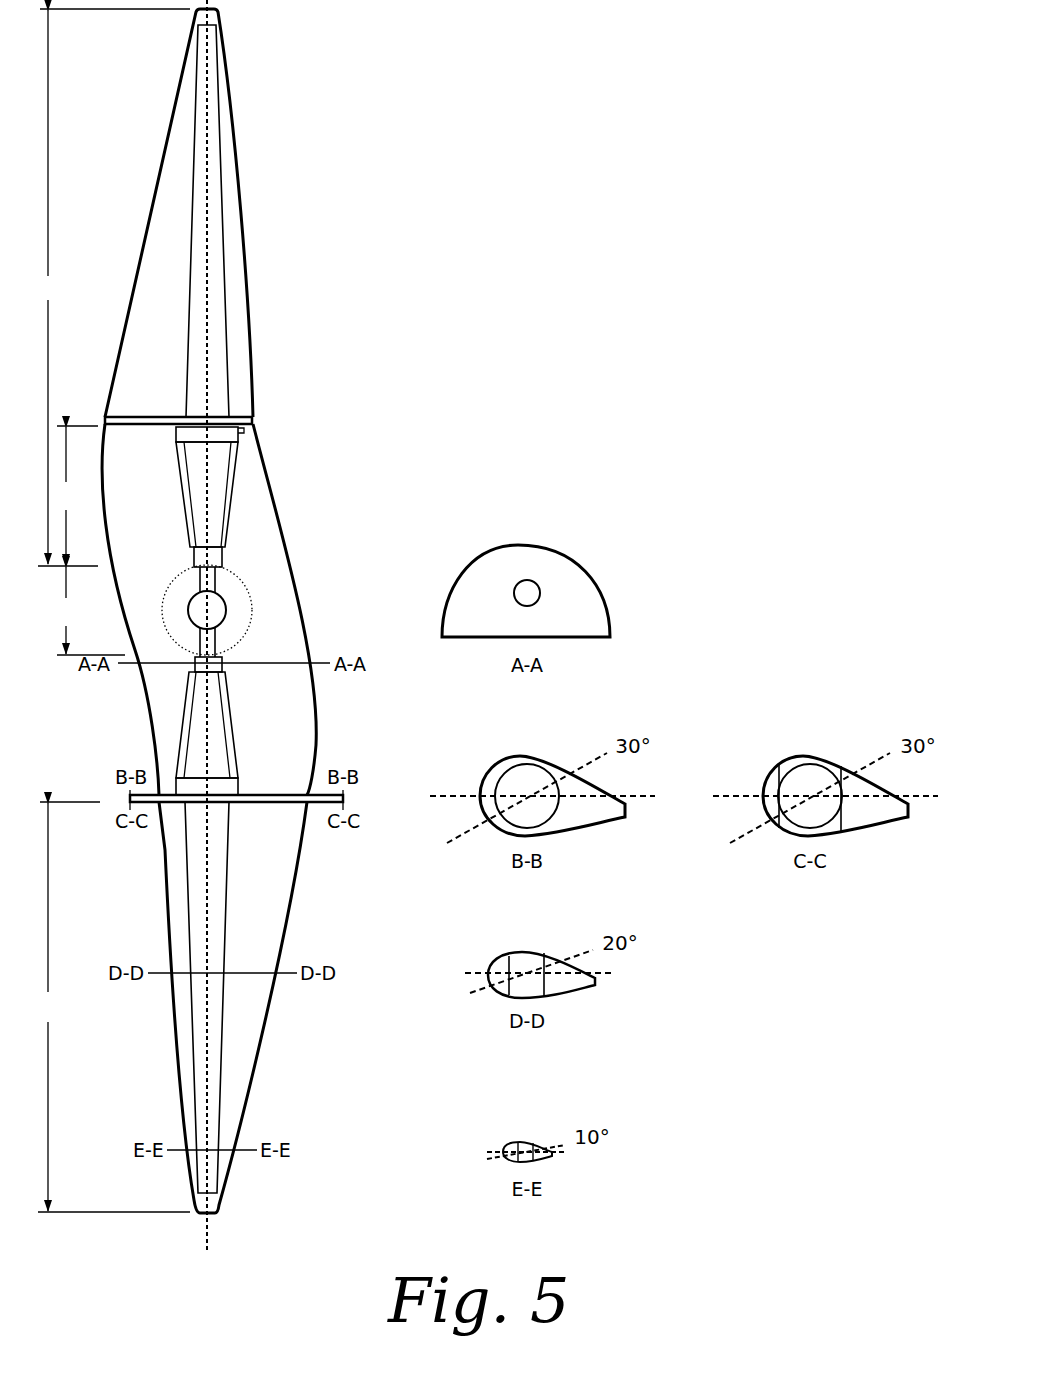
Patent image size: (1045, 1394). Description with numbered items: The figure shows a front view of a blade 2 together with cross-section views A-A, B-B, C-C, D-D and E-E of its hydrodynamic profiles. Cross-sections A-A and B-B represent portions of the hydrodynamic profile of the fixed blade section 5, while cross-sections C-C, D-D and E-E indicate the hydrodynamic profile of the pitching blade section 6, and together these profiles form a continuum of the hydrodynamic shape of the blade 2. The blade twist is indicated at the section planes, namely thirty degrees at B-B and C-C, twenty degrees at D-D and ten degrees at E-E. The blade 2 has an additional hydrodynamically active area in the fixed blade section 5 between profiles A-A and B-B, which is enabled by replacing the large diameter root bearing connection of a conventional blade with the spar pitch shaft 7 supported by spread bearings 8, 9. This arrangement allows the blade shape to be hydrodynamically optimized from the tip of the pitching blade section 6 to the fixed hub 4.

The blade 2 is at (115, 286).
The fixed hub 4 is at (91, 611).
The fixed blade section 5 is at (68, 496).
The pitching blade section 6 is at (114, 1007).
The spar pitch shaft 7 is at (227, 222).
The spread bearing 8 is at (244, 431).
The spread bearing 9 is at (225, 561).